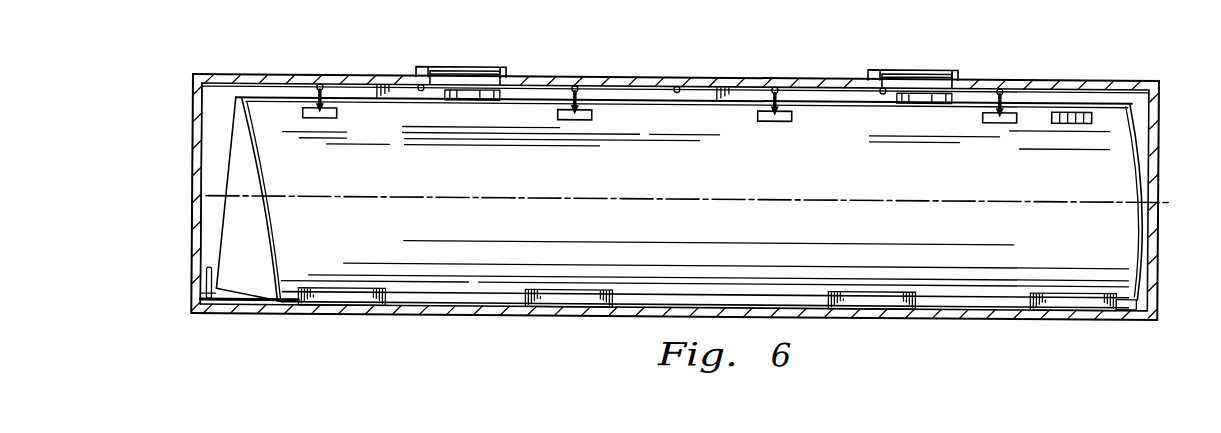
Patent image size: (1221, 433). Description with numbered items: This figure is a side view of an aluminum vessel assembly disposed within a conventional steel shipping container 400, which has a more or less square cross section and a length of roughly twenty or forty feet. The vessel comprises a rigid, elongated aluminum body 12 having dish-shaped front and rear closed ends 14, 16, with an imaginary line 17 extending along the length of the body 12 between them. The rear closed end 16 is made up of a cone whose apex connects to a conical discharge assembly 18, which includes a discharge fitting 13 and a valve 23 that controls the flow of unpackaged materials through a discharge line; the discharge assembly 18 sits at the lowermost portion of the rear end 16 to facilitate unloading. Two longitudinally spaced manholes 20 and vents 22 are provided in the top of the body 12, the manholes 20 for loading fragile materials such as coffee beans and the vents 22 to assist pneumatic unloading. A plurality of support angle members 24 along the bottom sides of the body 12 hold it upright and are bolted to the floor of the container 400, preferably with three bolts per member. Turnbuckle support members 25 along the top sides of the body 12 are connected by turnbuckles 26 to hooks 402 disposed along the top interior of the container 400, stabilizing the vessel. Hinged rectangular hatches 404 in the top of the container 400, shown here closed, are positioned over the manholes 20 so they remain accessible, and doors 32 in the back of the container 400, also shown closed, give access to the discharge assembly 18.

The steel shipping container 400 is at (215, 318).
The doors 32 is at (195, 177).
The rear closed end 16 is at (233, 131).
The front closed end 14 is at (1147, 281).
The aluminum body 12 is at (648, 181).
The discharge fitting 13 is at (206, 292).
The valve 23 is at (209, 269).
The conical discharge assembly 18 is at (249, 301).
The support angle members 24 is at (343, 304).
The turnbuckle support members 25 is at (338, 112).
The hooks 402 is at (320, 83).
The turnbuckles 26 is at (317, 91).
The hinged rectangular hatches 404 is at (426, 64).
The manholes 20 is at (490, 70).
The imaginary line 17 is at (430, 195).
The vents 22 is at (1073, 118).